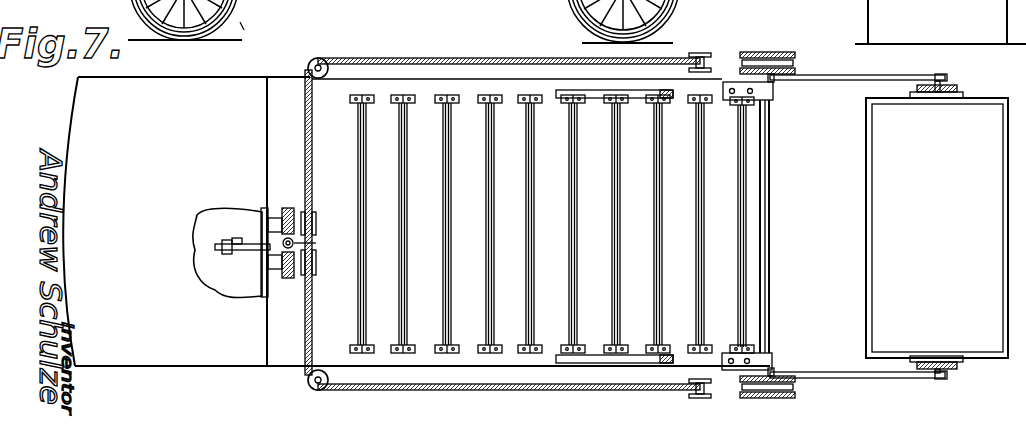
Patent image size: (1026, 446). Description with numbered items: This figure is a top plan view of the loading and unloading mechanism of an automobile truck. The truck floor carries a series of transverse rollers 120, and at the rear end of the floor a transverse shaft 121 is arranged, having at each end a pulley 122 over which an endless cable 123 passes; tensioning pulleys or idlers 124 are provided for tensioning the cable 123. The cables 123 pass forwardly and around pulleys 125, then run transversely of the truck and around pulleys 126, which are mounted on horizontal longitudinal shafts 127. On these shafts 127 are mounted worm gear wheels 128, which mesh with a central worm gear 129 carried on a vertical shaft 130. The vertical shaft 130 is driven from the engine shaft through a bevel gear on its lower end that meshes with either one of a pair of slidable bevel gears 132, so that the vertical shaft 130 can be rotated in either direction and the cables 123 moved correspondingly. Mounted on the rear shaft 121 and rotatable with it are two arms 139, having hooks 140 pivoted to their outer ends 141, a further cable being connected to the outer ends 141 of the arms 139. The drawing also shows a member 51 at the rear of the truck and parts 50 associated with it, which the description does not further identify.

The clamp plate 50 is at (937, 92).
The frame member 51 is at (893, 232).
The transverse rollers 120 is at (613, 328).
The transverse shaft 121 is at (768, 205).
The pulley 122 is at (767, 52).
The endless cable 123 is at (482, 56).
The tensioning pulleys or idlers 124 is at (706, 53).
The pulleys 125 is at (320, 57).
The pulleys 126 is at (313, 266).
The horizontal longitudinal shafts 127 is at (270, 208).
The worm gear wheels 128 is at (291, 210).
The central worm gear 129 is at (270, 236).
The vertical shaft 130 is at (284, 244).
The slidable bevel gears 132 is at (267, 18).
The arms 139 is at (843, 80).
The hooks 140 is at (958, 88).
The outer ends 141 is at (955, 78).